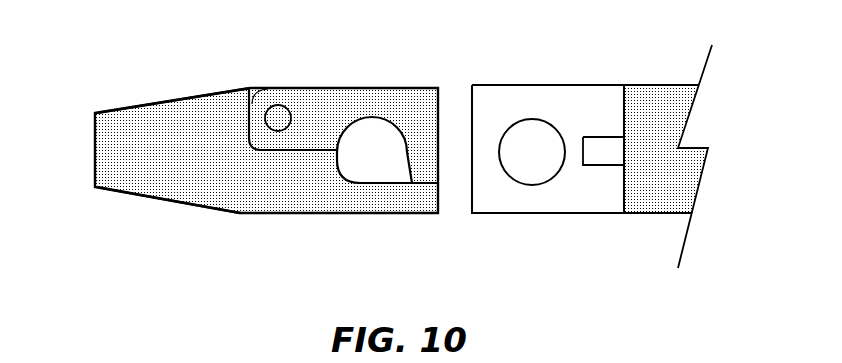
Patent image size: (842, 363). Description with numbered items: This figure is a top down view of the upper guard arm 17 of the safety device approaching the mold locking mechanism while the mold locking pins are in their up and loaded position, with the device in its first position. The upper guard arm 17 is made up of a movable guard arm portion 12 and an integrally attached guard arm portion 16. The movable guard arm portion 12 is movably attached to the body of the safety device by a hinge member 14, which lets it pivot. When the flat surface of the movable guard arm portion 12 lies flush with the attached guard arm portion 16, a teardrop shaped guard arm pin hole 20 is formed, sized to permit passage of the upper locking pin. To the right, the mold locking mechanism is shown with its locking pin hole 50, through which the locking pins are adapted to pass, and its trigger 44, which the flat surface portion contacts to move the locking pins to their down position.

The movable guard arm portion 12 is at (372, 90).
The hinge member 14 is at (285, 107).
The integrally attached guard arm portion 16 is at (244, 193).
The upper guard arm 17 is at (197, 95).
The guard arm pin hole 20 is at (369, 153).
The trigger 44 is at (602, 147).
The locking pin hole 50 is at (540, 146).